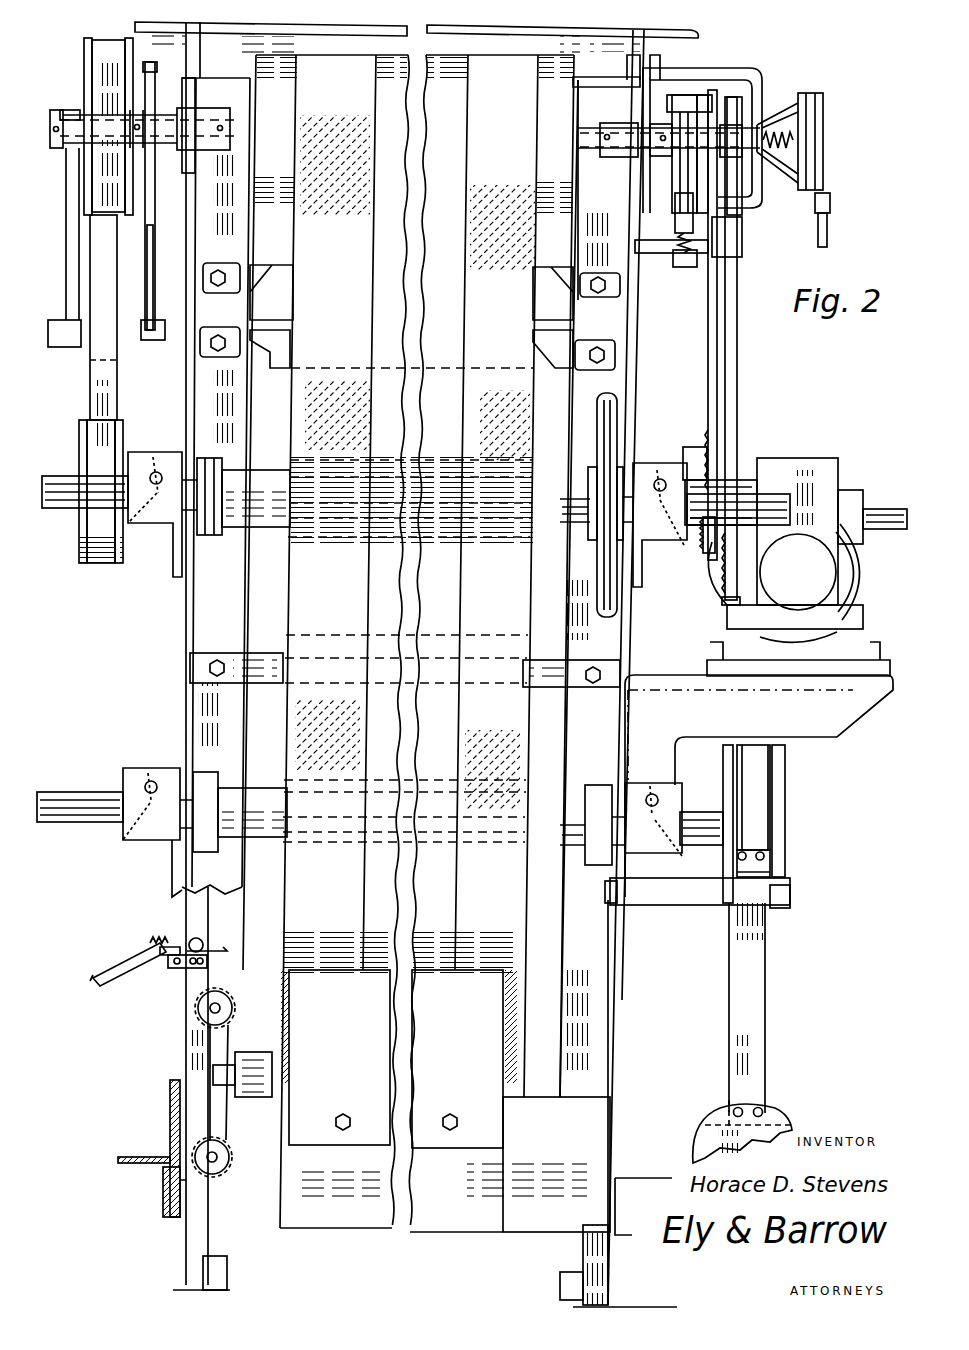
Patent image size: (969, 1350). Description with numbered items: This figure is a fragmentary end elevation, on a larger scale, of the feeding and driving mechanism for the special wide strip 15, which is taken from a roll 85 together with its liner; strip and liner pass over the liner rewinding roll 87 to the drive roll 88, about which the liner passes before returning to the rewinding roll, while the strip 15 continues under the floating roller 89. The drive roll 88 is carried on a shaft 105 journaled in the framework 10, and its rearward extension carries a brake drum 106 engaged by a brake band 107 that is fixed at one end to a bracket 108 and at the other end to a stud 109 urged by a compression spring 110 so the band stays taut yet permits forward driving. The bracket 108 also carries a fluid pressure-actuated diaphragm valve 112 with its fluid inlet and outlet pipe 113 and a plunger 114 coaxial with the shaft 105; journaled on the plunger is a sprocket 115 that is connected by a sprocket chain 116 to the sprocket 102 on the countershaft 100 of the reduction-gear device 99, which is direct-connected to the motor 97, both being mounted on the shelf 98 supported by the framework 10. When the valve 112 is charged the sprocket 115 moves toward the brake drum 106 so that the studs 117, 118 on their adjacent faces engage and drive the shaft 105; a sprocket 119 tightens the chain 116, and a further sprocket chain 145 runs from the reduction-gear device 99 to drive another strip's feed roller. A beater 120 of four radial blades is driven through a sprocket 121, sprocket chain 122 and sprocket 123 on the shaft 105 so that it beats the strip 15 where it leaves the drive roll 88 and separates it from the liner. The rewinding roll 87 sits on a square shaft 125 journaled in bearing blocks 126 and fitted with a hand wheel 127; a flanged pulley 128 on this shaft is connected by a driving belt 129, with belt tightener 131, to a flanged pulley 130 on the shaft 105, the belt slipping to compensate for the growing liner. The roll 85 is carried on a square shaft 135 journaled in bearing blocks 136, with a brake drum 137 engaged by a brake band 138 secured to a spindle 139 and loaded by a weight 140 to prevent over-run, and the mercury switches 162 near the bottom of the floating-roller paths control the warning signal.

The framework 10 is at (593, 962).
The wide strip 15 is at (310, 230).
The roll 85 is at (508, 900).
The liner rewinding roll 87 is at (495, 641).
The drive roll 88 is at (560, 90).
The floating roller 89 is at (250, 1097).
The motor 97 is at (867, 599).
The shelf 98 is at (820, 695).
The reduction-gear device 99 is at (807, 467).
The countershaft 100 is at (880, 514).
The sprocket 102 is at (698, 540).
The shaft 105 is at (238, 128).
The brake drum 106 is at (670, 163).
The brake band 107 is at (683, 185).
The bracket 108 is at (752, 208).
The stud 109 is at (673, 223).
The compression spring 110 is at (700, 257).
The diaphragm valve 112 is at (808, 107).
The fluid inlet and outlet pipe 113 is at (825, 230).
The plunger 114 is at (767, 110).
The sprocket 115 is at (727, 165).
The sprocket chain 116 is at (710, 345).
The stud 117 is at (712, 100).
The stud 118 is at (727, 90).
The sprocket 119 is at (708, 448).
The beater 120 is at (270, 352).
The sprocket 121 is at (162, 327).
The sprocket chain 122 is at (152, 262).
The sprocket 123 is at (163, 150).
The square shaft 125 is at (267, 520).
The bearing blocks 126 is at (162, 512).
The hand wheel 127 is at (605, 615).
The flanged pulley 128 is at (80, 553).
The driving belt 129 is at (110, 393).
The flanged pulley 130 is at (86, 52).
The belt tightener 131 is at (72, 363).
The square shaft 135 is at (540, 803).
The bearing blocks 136 is at (133, 777).
The brake drum 137 is at (777, 790).
The brake band 138 is at (758, 972).
The spindle 139 is at (685, 896).
The weight 140 is at (780, 1117).
The sprocket chain 145 is at (737, 353).
The mercury switches 162 is at (125, 980).